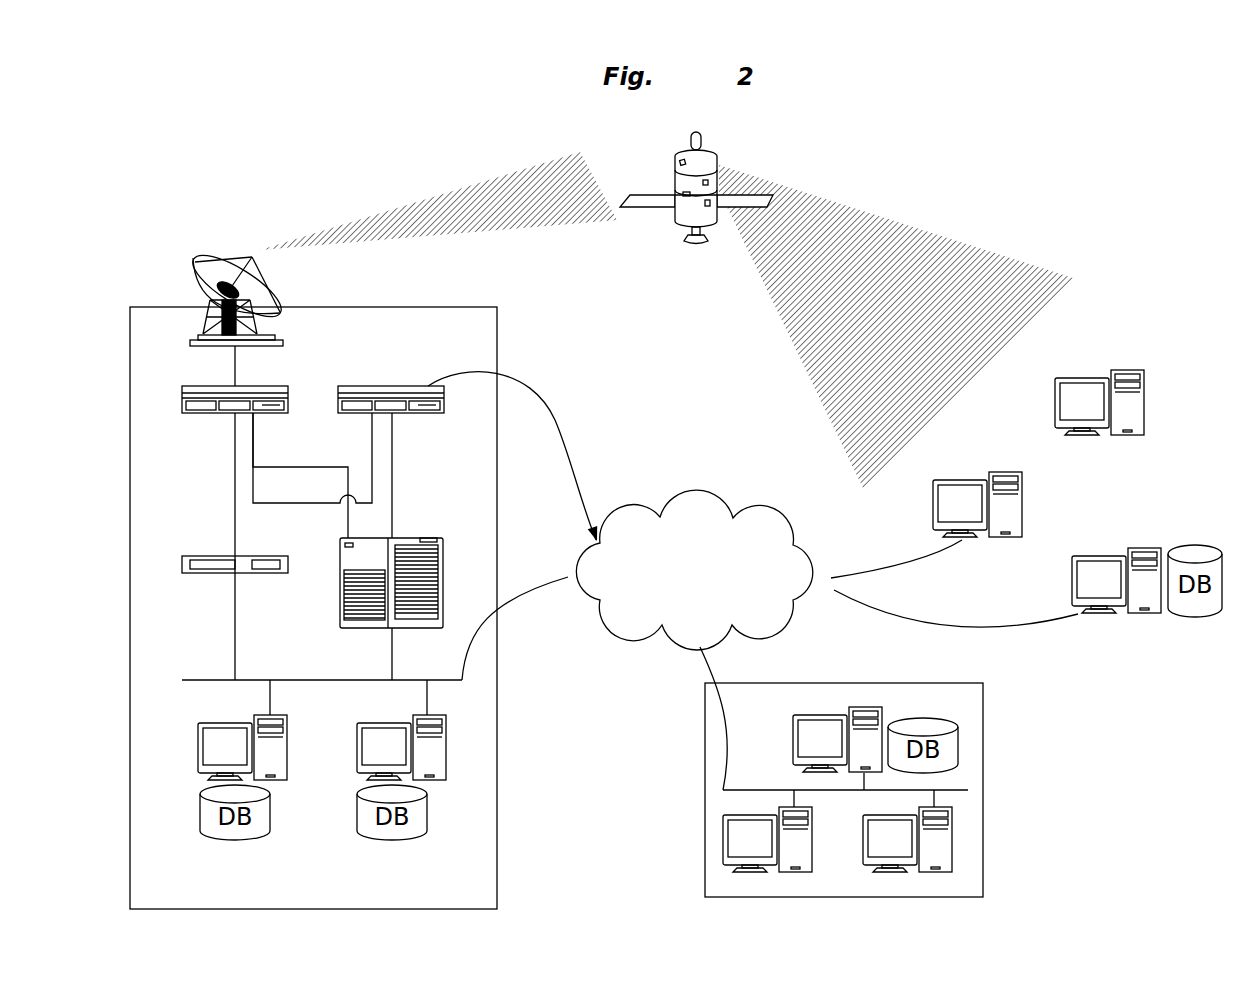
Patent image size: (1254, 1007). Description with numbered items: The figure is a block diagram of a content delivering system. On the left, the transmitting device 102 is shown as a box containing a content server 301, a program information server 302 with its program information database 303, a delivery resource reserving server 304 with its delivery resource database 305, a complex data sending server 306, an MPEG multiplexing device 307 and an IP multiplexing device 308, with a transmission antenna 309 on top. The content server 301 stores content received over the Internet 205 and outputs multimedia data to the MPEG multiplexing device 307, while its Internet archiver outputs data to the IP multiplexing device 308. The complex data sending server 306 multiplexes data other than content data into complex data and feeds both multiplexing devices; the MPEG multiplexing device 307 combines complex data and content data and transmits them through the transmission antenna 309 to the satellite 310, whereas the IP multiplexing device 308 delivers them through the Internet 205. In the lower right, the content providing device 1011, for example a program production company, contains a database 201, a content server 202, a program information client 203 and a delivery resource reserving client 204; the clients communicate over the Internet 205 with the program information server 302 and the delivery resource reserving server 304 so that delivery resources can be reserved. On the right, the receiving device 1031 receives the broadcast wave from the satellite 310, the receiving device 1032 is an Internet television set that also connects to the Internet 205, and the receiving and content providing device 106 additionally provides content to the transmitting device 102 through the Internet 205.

The transmitting device 102 is at (166, 307).
The transmission antenna 309 is at (275, 318).
The IP multiplexing device 308 is at (399, 386).
The MPEG multiplexing device 307 is at (200, 413).
The complex data sending server 306 is at (200, 573).
The content server 301 is at (421, 537).
The delivery resource reserving server 304 is at (202, 720).
The delivery resource database 305 is at (238, 840).
The program information server 302 is at (360, 720).
The program information database 303 is at (397, 840).
The satellite 310 is at (697, 240).
The Internet 205 is at (703, 487).
The receiving device 1031 is at (1143, 398).
The receiving device 1032 is at (1022, 505).
The receiving and content providing device 106 is at (1143, 615).
The content providing device 1011 is at (705, 738).
The database 201 is at (828, 713).
The content server 202 is at (962, 748).
The program information client 203 is at (952, 848).
The delivery resource reserving client 204 is at (723, 847).